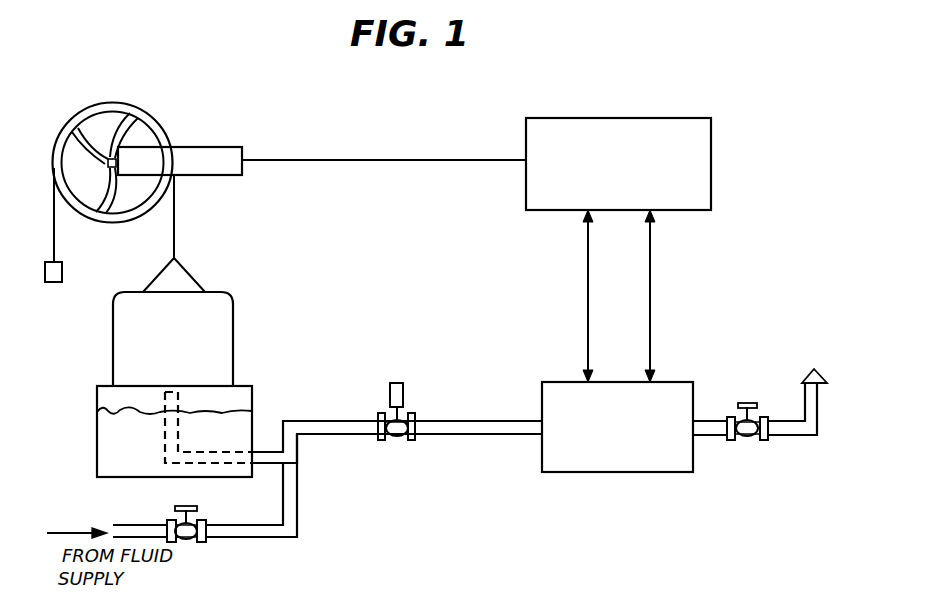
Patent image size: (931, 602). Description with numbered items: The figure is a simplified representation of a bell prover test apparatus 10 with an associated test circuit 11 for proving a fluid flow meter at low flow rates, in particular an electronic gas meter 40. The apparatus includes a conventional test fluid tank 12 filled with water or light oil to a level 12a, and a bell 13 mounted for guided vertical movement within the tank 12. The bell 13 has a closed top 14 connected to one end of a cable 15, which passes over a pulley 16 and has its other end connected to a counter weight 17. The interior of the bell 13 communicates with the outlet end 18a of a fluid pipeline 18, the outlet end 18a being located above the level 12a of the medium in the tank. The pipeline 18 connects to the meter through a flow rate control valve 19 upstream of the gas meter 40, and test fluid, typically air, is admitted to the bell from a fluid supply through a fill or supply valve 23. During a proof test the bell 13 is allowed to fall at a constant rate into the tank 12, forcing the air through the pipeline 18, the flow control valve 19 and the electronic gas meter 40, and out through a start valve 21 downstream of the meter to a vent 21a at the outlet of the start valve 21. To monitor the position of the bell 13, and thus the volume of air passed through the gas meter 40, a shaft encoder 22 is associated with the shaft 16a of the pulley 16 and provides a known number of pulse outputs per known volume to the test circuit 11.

The bell prover test apparatus 10 is at (108, 316).
The test circuit 11 is at (618, 164).
The test fluid tank 12 is at (108, 433).
The level 12a is at (243, 412).
The bell 13 is at (220, 316).
The closed top 14 is at (215, 292).
The cable 15 is at (55, 228).
The pulley 16 is at (77, 108).
The shaft 16a is at (113, 158).
The counter weight 17 is at (50, 283).
The fluid pipeline 18 is at (325, 436).
The outlet end 18a is at (167, 392).
The flow rate control valve 19 is at (397, 440).
The start valve 21 is at (748, 437).
The vent 21a is at (805, 402).
The shaft encoder 22 is at (207, 177).
The supply valve 23 is at (188, 543).
The electronic gas meter 40 is at (627, 466).